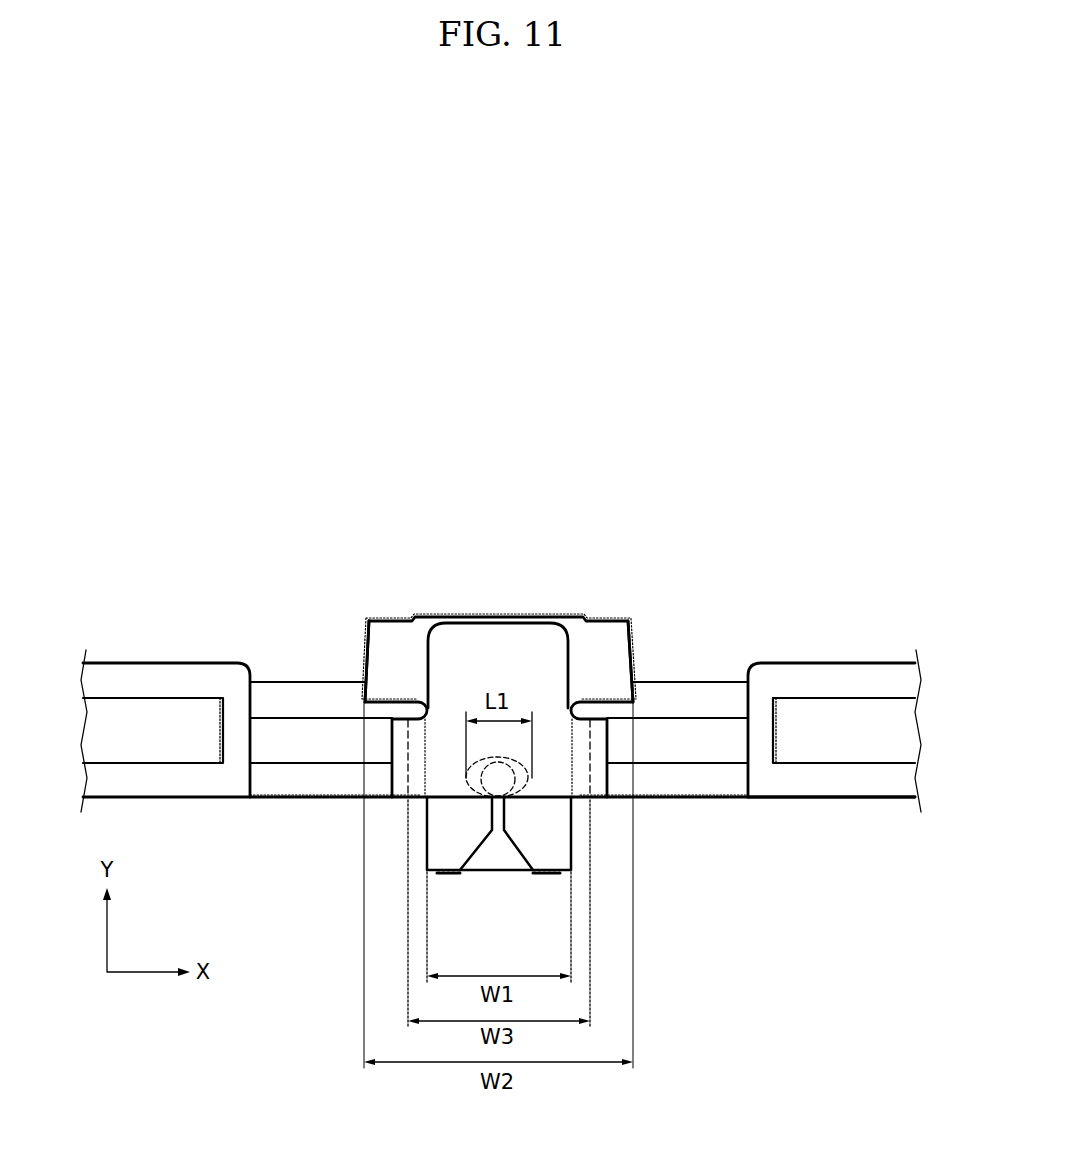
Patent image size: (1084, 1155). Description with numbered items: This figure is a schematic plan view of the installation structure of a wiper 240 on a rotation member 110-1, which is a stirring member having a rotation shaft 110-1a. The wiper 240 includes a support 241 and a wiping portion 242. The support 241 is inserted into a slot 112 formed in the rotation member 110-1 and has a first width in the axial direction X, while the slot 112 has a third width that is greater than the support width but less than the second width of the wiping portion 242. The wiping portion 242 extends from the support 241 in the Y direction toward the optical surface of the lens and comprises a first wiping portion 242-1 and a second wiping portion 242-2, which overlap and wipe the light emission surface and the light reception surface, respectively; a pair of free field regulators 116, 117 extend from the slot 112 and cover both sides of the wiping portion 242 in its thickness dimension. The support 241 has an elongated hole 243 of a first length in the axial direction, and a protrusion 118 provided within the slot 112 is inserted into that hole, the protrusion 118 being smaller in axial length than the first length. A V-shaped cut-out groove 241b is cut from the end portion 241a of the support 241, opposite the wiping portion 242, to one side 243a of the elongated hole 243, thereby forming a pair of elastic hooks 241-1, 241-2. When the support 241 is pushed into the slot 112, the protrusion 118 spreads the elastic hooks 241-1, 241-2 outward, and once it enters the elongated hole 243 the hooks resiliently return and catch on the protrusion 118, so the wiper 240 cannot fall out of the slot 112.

The wiper 240 is at (396, 606).
The wiping portion 242 is at (452, 615).
The first wiping portion 242-1 is at (366, 655).
The second wiping portion 242-2 is at (632, 655).
The free field regulator 116 is at (503, 628).
The free field regulator 117 is at (522, 640).
The protrusion 118 is at (513, 768).
The elongated hole 243 is at (528, 782).
The slot 112 is at (423, 797).
The support 241 is at (572, 773).
The elastic hook 241-1 is at (425, 840).
The elastic hook 241-2 is at (573, 840).
The end portion of the support 241a is at (455, 873).
The cut-out groove 241b is at (492, 833).
The one side of the elongated hole 243a is at (518, 800).
The rotation member 110-1 is at (879, 826).
The rotation shaft 110-1a is at (782, 798).